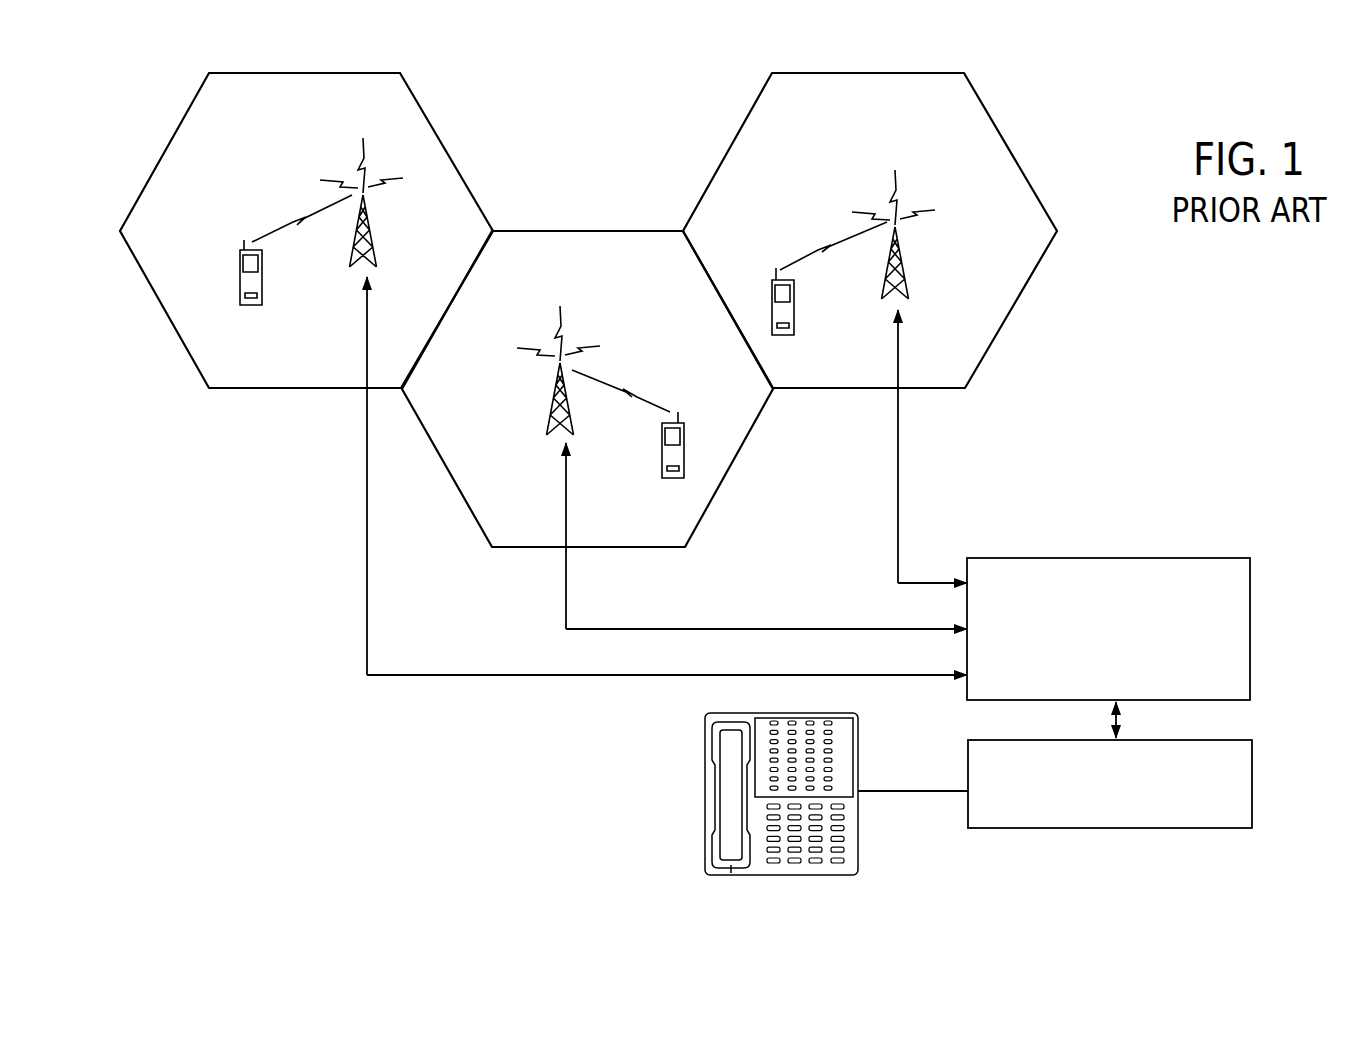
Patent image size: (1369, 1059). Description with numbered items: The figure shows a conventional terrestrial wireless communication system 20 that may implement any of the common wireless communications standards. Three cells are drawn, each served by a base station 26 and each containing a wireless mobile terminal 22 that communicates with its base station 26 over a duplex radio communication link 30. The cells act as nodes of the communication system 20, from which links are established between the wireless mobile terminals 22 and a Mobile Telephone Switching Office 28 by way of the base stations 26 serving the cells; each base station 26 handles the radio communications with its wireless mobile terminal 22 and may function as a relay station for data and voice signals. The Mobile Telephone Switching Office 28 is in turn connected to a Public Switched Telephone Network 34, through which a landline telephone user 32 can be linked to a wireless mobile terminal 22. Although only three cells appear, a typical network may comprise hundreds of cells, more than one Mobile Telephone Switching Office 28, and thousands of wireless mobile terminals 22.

The terrestrial wireless communication system 20 is at (1058, 137).
The wireless mobile terminal 22 is at (240, 277).
The base station 26 is at (382, 238).
The Mobile Telephone Switching Office 28 is at (1207, 557).
The duplex radio communication link 30 is at (300, 200).
The landline telephone user 32 is at (708, 768).
The Public Switched Telephone Network 34 is at (1255, 765).